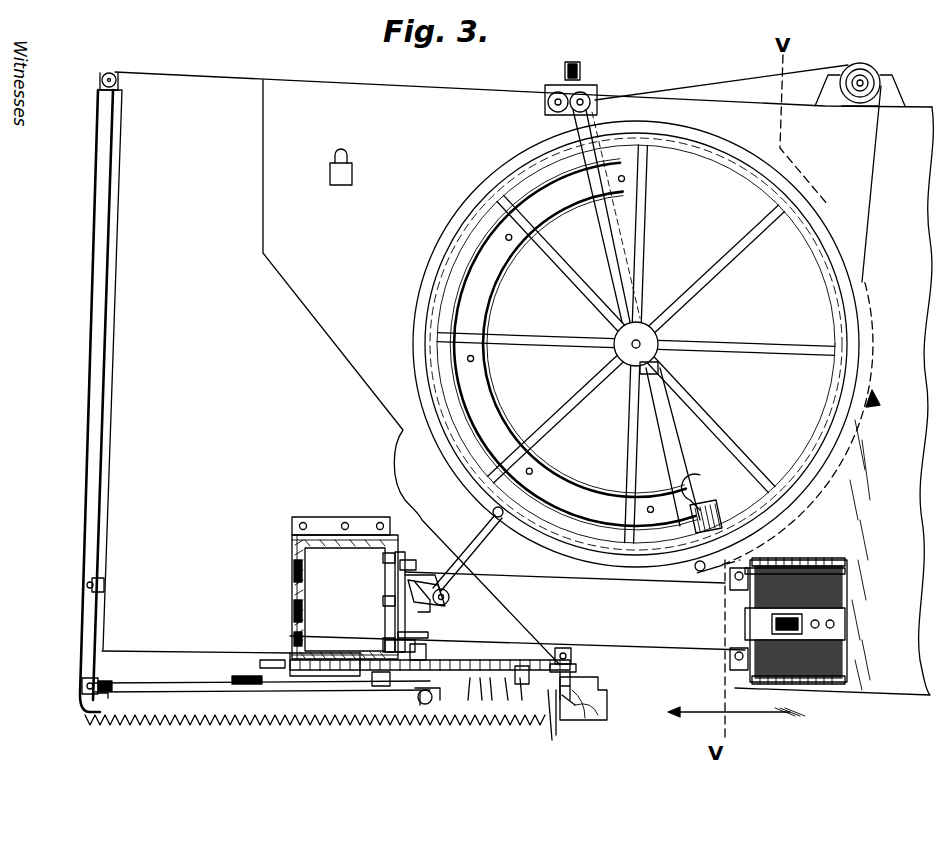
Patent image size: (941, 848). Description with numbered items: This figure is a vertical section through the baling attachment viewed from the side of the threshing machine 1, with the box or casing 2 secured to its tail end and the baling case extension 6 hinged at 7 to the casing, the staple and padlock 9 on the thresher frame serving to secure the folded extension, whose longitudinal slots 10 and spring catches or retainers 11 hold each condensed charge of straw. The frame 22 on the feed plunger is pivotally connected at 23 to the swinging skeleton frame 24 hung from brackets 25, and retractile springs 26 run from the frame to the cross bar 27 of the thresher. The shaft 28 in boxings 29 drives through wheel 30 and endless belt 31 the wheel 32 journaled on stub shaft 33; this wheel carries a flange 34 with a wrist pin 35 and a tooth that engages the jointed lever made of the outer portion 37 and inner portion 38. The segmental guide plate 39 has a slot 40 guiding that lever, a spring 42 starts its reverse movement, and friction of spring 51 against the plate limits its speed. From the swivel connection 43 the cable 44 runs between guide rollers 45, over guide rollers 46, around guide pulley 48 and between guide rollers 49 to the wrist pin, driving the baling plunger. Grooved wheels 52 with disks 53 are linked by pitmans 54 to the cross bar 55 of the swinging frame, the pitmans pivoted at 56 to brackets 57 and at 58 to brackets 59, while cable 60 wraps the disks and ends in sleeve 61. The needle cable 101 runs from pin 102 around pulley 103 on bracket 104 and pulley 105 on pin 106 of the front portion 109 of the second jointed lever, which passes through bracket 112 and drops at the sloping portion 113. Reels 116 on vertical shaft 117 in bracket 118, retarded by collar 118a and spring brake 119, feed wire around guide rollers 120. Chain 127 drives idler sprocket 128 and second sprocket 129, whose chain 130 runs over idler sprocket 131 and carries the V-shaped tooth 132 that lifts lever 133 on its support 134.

The threshing machine 1 is at (895, 370).
The box or casing 2 is at (383, 372).
The baling case extension 6 is at (345, 597).
The hinge 7 is at (329, 517).
The staple and padlock 9 is at (352, 160).
The longitudinal slots 10 is at (294, 572).
The spring catches or retainers 11 is at (300, 544).
The frame 22 is at (92, 588).
The pivotal connection 23 is at (88, 583).
The swinging skeleton frame 24 is at (83, 392).
The brackets 25 is at (101, 80).
The retractile springs 26 is at (272, 726).
The cross bar 27 is at (598, 720).
The shaft 28 is at (870, 80).
The boxings 29 is at (838, 106).
The wheel 30 is at (865, 110).
The endless belt or connection 31 is at (868, 212).
The wheel 32 is at (712, 262).
The stub shaft 33 is at (640, 344).
The flange 34 is at (410, 334).
The wrist pin 35 is at (492, 511).
The outer portion of jointed lever 37 is at (676, 447).
The inner portion of jointed lever 38 is at (660, 378).
The segmental guide plate 39 is at (462, 306).
The slot 40 is at (452, 590).
The spring 42 is at (702, 495).
The swivel connection 43 is at (697, 569).
The cable 44 is at (630, 400).
The guide rollers 45 is at (545, 105).
The guide rollers 46 is at (580, 78).
The guide pulley 48 is at (448, 606).
The guide rollers 49 is at (422, 597).
The spring 51 is at (702, 492).
The grooved wheels 52 is at (258, 664).
The disks 53 is at (232, 679).
The pitmans 54 is at (262, 695).
The cross bar 55 is at (82, 684).
The pivot 56 is at (433, 699).
The brackets 57 is at (421, 706).
The pivot 58 is at (112, 683).
The brackets 59 is at (108, 693).
The cable 60 is at (255, 657).
The sleeve 61 is at (388, 686).
The cable 101 is at (578, 704).
The pin 102 is at (565, 648).
The pulley 103 is at (572, 688).
The bracket 104 is at (576, 667).
The pulley 105 is at (552, 744).
The pin 106 is at (556, 735).
The front portion of jointed lever 109 is at (473, 645).
The bracket 112 is at (468, 702).
The sloping portion 113 is at (482, 702).
The reels 116 is at (847, 580).
The vertical shaft 117 is at (800, 558).
The bracket 118 is at (845, 570).
The collar 118a is at (735, 620).
The spring brake 119 is at (845, 624).
The guide rollers 120 is at (405, 570).
The chain 127 is at (440, 647).
The idler sprocket wheel 128 is at (428, 636).
The second sprocket wheel 129 is at (368, 668).
The chain 130 is at (522, 666).
The idler sprocket wheel 131 is at (574, 676).
The V-shaped tooth 132 is at (492, 702).
The lever 133 is at (508, 702).
The support 134 is at (522, 702).